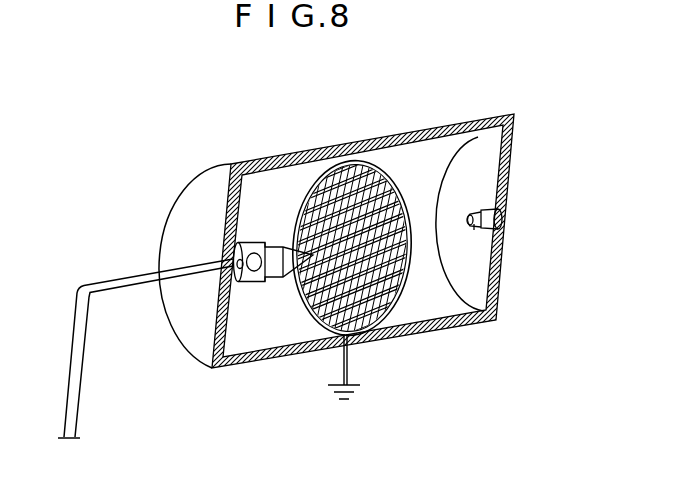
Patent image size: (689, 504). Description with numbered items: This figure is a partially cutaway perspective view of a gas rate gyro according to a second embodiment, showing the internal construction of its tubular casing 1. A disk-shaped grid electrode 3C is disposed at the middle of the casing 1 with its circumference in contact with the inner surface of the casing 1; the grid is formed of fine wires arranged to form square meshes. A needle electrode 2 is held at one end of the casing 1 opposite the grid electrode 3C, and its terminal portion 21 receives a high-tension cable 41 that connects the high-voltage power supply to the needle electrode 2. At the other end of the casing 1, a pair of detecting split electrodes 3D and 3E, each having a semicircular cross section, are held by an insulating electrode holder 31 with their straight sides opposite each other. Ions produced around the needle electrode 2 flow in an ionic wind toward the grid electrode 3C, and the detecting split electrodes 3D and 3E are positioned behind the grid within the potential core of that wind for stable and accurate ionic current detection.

The tubular casing 1 is at (420, 130).
The needle electrode 2 is at (283, 240).
The connector core terminal 21 is at (250, 283).
The grid electrode 3C is at (308, 180).
The detecting split electrode 3D is at (467, 220).
The detecting split electrode 3E is at (477, 232).
The insulating electrode holder 31 is at (505, 214).
The high-tension cable 41 is at (112, 282).